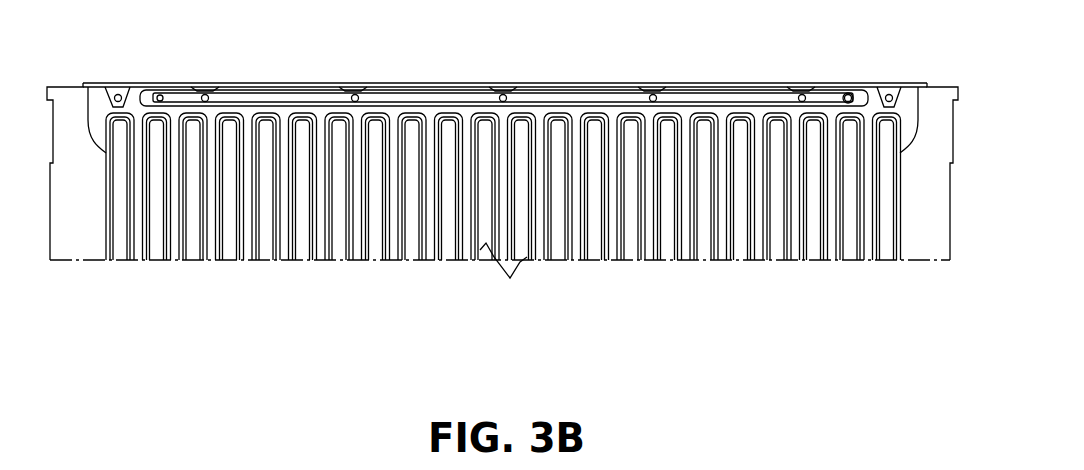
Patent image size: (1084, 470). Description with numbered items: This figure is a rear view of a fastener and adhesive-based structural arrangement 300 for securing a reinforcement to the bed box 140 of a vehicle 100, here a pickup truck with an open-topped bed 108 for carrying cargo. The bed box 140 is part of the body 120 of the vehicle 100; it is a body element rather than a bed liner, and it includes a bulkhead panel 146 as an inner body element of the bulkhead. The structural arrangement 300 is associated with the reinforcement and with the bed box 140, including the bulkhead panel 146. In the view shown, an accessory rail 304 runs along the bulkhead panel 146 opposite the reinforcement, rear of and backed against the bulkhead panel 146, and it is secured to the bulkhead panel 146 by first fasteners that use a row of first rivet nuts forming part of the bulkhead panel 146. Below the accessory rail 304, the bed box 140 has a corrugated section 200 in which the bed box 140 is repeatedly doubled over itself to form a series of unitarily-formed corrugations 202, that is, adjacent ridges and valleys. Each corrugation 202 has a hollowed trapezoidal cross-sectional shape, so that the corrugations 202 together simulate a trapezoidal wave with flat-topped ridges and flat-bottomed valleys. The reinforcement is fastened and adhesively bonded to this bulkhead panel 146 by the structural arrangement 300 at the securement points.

The vehicle 100 is at (106, 79).
The bed 108 is at (178, 77).
The body 120 is at (250, 77).
The bed box 140 is at (337, 90).
The bulkhead panel 146 is at (890, 262).
The corrugated section 200 is at (865, 262).
The corrugations 202 is at (850, 243).
The structural arrangement 300 is at (503, 84).
The accessory rail 304 is at (843, 91).